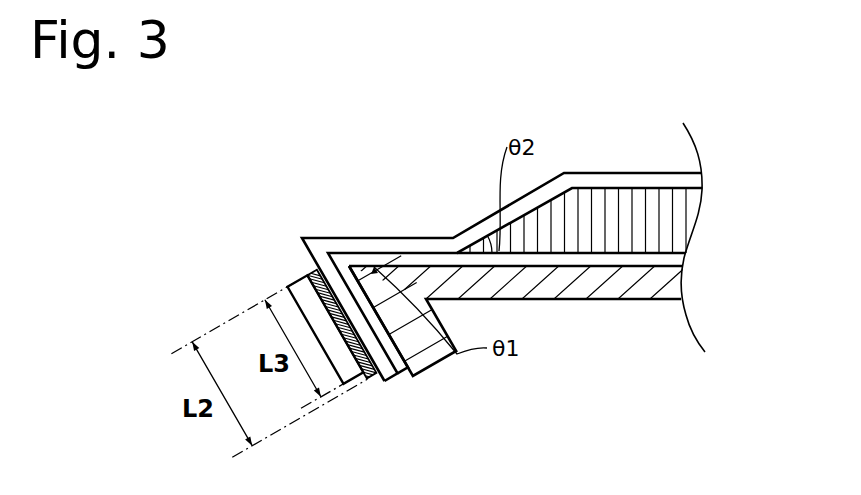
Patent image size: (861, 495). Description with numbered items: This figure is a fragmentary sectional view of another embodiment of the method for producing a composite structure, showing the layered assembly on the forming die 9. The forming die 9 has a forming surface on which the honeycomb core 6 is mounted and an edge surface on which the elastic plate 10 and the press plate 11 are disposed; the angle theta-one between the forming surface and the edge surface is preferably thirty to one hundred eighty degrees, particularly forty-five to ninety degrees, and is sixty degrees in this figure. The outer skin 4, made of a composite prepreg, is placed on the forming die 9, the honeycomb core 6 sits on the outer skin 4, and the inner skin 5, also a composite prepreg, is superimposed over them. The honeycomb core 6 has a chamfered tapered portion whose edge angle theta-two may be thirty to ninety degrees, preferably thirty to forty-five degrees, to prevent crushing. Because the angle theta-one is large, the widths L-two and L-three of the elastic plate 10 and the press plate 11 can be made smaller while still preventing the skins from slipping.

The outer skin 4 is at (672, 262).
The inner skin 5 is at (692, 180).
The honeycomb core 6 is at (617, 200).
The forming die 9 is at (557, 282).
The elastic plate 10 is at (312, 272).
The press plate 11 is at (300, 284).